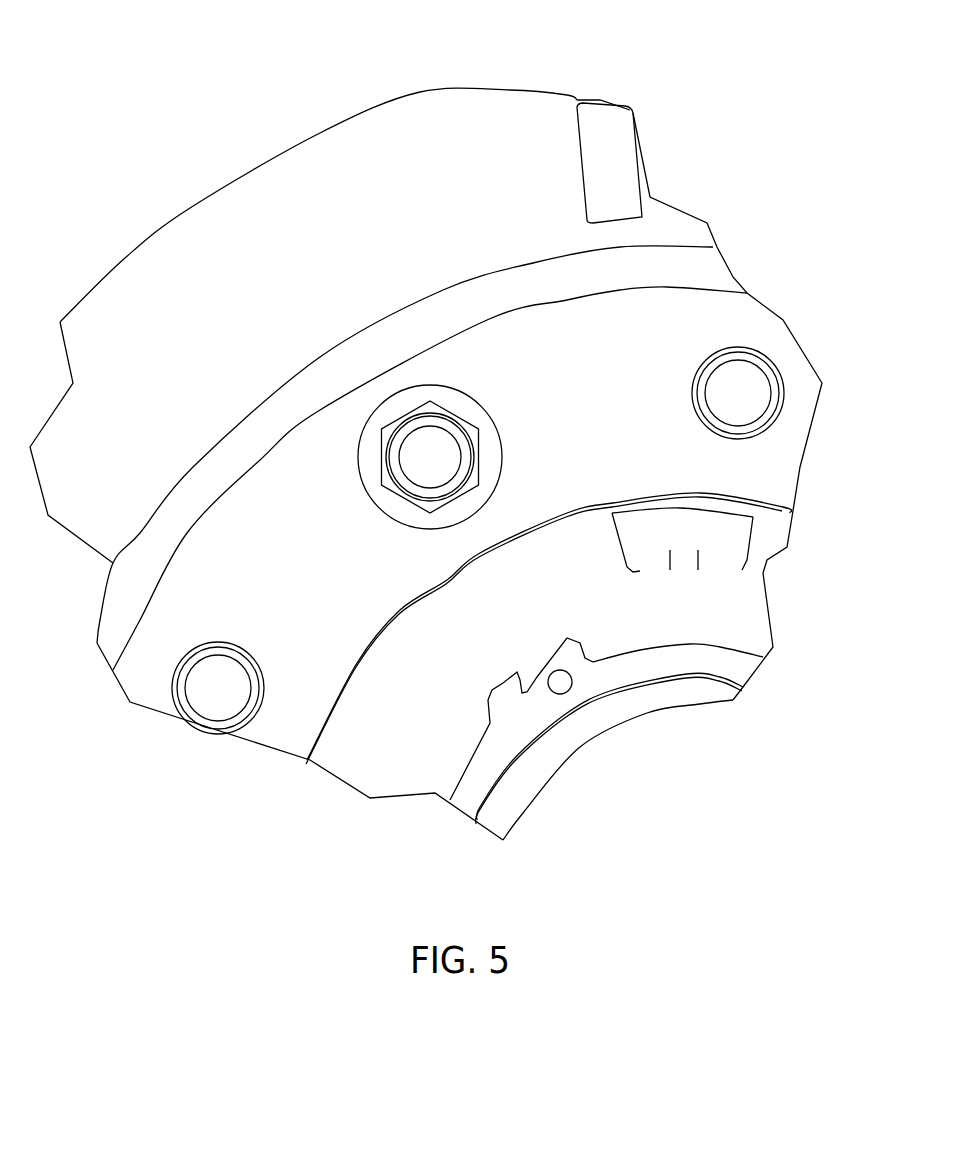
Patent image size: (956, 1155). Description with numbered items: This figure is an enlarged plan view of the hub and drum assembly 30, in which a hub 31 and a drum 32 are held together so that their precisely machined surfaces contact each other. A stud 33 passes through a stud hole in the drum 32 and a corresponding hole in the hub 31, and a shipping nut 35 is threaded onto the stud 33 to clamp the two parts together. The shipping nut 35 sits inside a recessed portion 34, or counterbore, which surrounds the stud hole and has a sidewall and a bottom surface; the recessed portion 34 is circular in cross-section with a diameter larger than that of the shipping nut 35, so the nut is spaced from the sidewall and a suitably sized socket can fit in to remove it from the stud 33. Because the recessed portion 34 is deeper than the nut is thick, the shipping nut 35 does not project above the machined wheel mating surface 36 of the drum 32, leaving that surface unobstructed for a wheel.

The hub and drum assembly 30 is at (761, 55).
The hub 31 is at (617, 670).
The drum 32 is at (483, 152).
The stud 33 is at (437, 433).
The recessed portion 34 is at (363, 453).
The shipping nut 35 is at (380, 430).
The wheel mating surface 36 is at (493, 357).